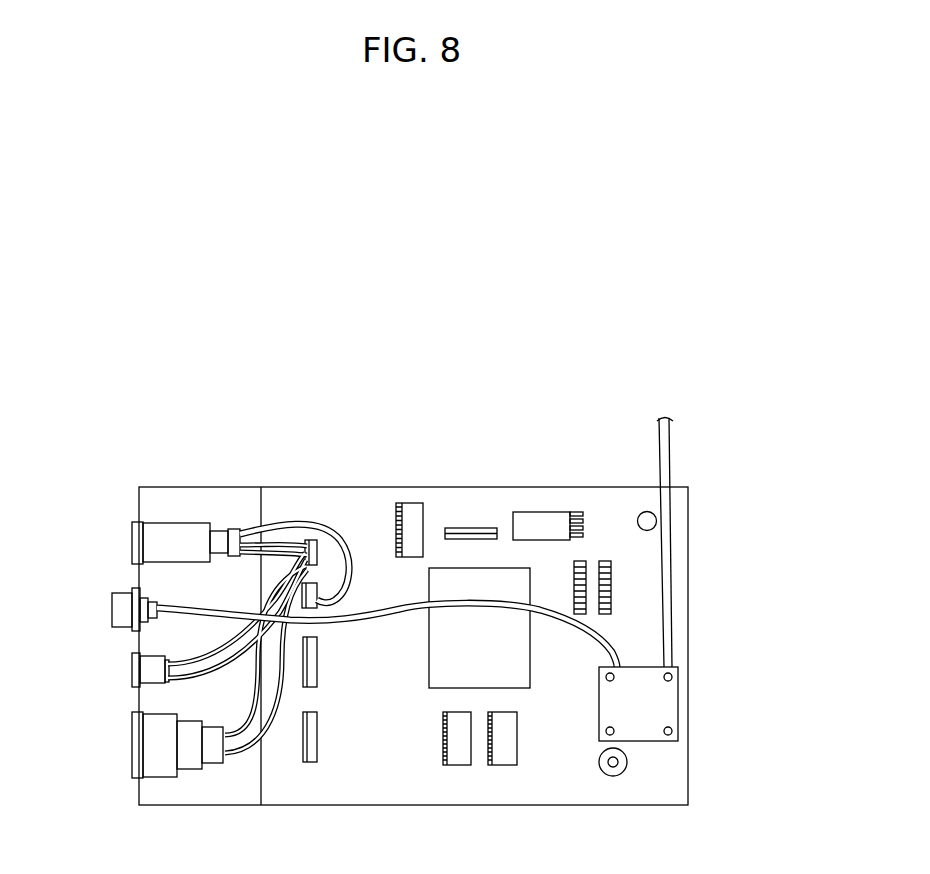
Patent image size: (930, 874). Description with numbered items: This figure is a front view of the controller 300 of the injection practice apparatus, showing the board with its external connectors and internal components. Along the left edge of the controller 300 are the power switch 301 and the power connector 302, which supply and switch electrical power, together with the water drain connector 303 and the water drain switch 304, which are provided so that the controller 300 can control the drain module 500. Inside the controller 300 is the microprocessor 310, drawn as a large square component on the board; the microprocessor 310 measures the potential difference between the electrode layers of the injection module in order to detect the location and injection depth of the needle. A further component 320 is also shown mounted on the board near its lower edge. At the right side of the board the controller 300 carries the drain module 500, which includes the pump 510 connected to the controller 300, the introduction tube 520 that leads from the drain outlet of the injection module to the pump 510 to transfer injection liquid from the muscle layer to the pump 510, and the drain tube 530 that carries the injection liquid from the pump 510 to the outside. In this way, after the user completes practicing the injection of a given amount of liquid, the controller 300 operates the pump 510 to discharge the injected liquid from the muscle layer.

The controller 300 is at (371, 418).
The power switch 301 is at (132, 746).
The power connector 302 is at (132, 671).
The water drain connector 303 is at (120, 610).
The water drain switch 304 is at (135, 540).
The microprocessor 310 is at (477, 585).
The memory module 320 is at (456, 757).
The drain module 500 is at (752, 617).
The pump 510 is at (672, 694).
The introduction tube 520 is at (672, 623).
The drain tube 530 is at (622, 651).